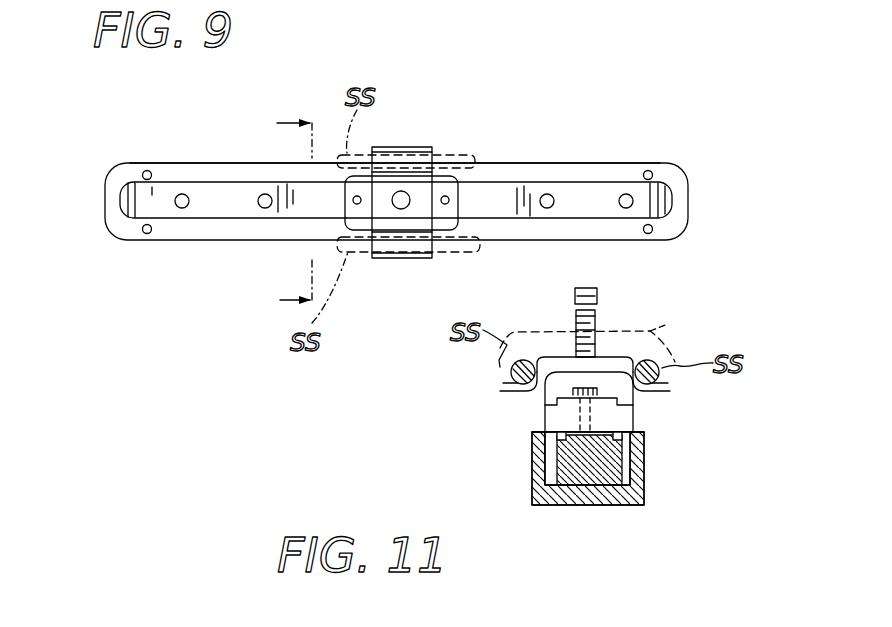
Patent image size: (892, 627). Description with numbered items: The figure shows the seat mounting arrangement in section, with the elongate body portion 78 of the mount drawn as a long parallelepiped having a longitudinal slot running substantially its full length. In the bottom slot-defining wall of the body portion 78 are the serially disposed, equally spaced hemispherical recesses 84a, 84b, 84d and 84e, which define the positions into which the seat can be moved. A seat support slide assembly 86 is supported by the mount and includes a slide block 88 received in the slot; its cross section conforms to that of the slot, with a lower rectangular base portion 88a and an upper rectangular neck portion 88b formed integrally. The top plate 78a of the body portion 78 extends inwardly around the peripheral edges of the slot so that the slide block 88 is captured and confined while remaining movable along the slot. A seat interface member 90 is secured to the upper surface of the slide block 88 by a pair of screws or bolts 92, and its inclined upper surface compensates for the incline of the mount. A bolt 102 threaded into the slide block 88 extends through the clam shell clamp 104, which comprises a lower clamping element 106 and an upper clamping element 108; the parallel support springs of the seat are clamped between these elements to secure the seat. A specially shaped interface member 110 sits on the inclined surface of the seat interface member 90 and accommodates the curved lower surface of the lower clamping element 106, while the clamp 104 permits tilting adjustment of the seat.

In FIG. 9, the body portion 78 is at (549, 238).
In FIG. 11, the body portion 78 is at (645, 470).
In FIG. 9, the top plate 78a is at (188, 170).
In FIG. 11, the top plate 78a is at (637, 433).
In FIG. 9, the hemispherical recess 84a is at (182, 208).
In FIG. 9, the hemispherical recess 84b is at (265, 208).
In FIG. 9, the hemispherical recess 84d is at (548, 200).
In FIG. 9, the hemispherical recess 84e is at (626, 208).
In FIG. 9, the seat support slide assembly 86 is at (375, 262).
In FIG. 11, the seat support slide assembly 86 is at (518, 435).
In FIG. 11, the slide block 88 is at (577, 449).
In FIG. 11, the lower rectangular base portion 88a is at (636, 484).
In FIG. 11, the upper rectangular neck portion 88b is at (556, 433).
In FIG. 11, the seat interface member 90 is at (543, 415).
In FIG. 9, the screws or bolts 92 is at (353, 200).
In FIG. 9, the bolt 102 is at (404, 193).
In FIG. 11, the bolt 102 is at (575, 296).
In FIG. 11, the clam shell mounting assembly or clamp 104 is at (690, 348).
In FIG. 11, the lower clamping element 106 is at (670, 391).
In FIG. 9, the upper clamping element 108 is at (410, 258).
In FIG. 11, the upper clamping element 108 is at (665, 325).
In FIG. 11, the interface member 110 is at (530, 397).